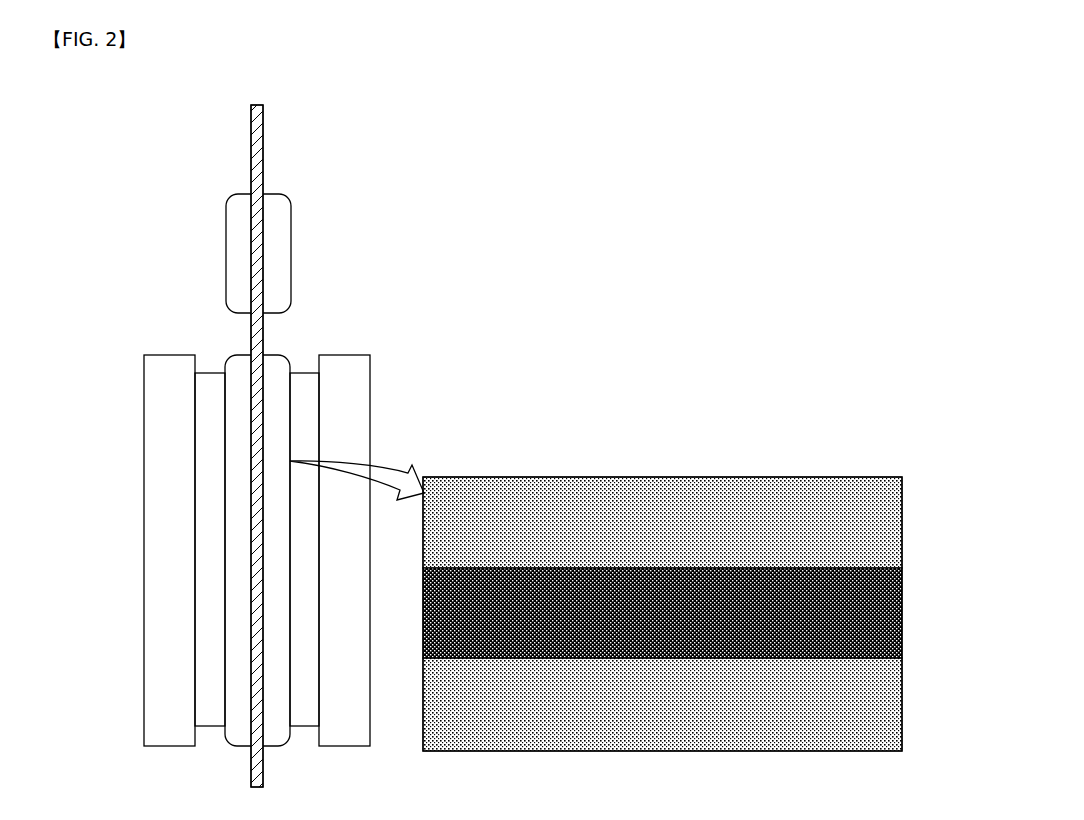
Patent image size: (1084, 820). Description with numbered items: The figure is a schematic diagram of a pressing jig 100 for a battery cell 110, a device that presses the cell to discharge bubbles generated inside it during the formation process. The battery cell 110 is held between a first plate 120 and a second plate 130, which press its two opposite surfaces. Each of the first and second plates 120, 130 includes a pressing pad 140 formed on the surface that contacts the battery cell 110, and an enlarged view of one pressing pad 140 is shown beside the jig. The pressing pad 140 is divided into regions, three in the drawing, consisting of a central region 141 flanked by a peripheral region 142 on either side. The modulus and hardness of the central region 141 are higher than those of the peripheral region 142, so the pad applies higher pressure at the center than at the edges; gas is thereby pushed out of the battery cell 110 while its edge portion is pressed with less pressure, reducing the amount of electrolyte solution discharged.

The pressing jig 100 is at (157, 154).
The battery cell 110 is at (228, 360).
The first plate 120 is at (148, 355).
The second plate 130 is at (370, 372).
The pressing pad 140 is at (759, 436).
The central region 141 is at (903, 611).
The peripheral region 142 is at (903, 521).